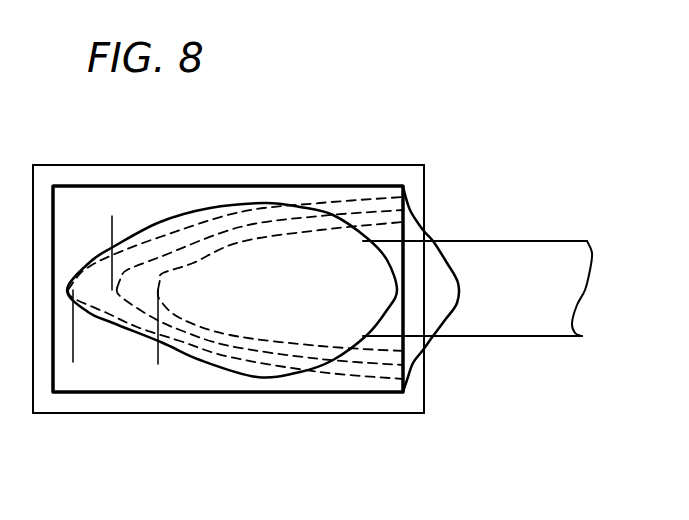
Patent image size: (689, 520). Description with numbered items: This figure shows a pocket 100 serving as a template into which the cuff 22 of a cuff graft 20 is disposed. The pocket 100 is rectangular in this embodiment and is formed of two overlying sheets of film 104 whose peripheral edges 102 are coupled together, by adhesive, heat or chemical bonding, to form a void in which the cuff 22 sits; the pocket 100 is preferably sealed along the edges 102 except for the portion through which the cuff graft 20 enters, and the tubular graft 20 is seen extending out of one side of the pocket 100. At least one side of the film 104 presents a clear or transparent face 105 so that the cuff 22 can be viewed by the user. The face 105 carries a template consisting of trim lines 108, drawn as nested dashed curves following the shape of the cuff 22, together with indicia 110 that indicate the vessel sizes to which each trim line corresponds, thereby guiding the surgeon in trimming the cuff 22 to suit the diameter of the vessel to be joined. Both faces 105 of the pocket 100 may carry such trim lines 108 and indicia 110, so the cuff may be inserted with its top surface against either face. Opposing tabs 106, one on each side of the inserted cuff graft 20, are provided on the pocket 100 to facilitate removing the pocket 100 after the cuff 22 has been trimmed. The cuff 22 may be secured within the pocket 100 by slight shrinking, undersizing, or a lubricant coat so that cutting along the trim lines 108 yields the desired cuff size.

The pocket 100 is at (389, 143).
The peripheral edges 102 is at (327, 414).
The sheets of film 104 is at (165, 416).
The transparent face 105 is at (155, 205).
The tabs 106 is at (432, 232).
The trim lines 108 is at (267, 222).
The indicia 110 is at (147, 384).
The cuff 22 is at (230, 392).
The cuff graft 20 is at (522, 365).